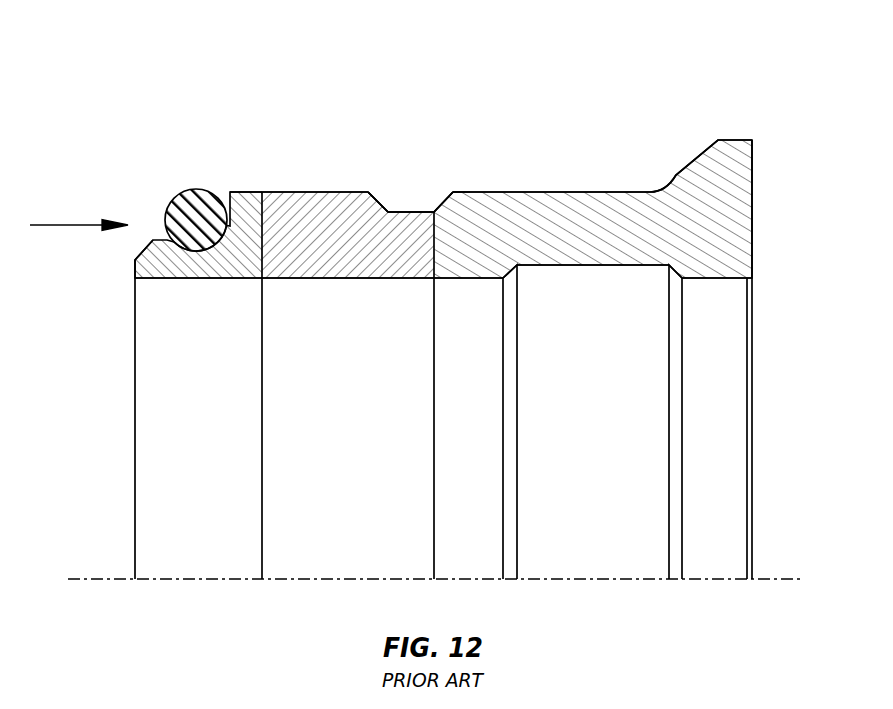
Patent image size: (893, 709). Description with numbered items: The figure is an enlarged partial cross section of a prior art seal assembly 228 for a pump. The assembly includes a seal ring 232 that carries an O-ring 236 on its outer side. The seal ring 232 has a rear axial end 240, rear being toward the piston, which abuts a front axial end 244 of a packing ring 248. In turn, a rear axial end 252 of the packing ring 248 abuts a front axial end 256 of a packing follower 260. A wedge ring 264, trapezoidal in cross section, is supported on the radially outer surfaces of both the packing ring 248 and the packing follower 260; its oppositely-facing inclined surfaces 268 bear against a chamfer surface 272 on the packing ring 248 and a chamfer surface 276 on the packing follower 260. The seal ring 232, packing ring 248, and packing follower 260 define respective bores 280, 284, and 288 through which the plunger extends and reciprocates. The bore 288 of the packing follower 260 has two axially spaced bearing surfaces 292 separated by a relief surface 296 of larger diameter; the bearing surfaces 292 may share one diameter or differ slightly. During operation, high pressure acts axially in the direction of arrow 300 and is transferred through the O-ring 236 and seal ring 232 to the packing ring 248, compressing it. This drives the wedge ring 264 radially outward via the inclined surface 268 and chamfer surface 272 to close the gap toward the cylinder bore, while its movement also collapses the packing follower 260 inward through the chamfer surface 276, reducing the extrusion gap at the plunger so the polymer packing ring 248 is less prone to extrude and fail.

The prior art seal assembly 228 is at (662, 86).
The seal ring 232 is at (248, 190).
The O-ring 236 is at (179, 201).
The rear axial end 240 is at (264, 218).
The front axial end 244 is at (258, 264).
The packing ring 248 is at (340, 190).
The rear axial end 252 is at (436, 250).
The front axial end 256 is at (432, 264).
The packing follower 260 is at (540, 191).
The wedge ring 264 is at (423, 191).
The inclined surfaces 268 is at (370, 199).
The chamfer surface 272 is at (392, 210).
The chamfer surface 276 is at (433, 205).
The bore 280 is at (153, 280).
The bore 284 is at (313, 278).
The bore 288 is at (730, 278).
The bearing surfaces 292 is at (467, 277).
The relief surface 296 is at (588, 265).
The arrow 300 is at (63, 227).